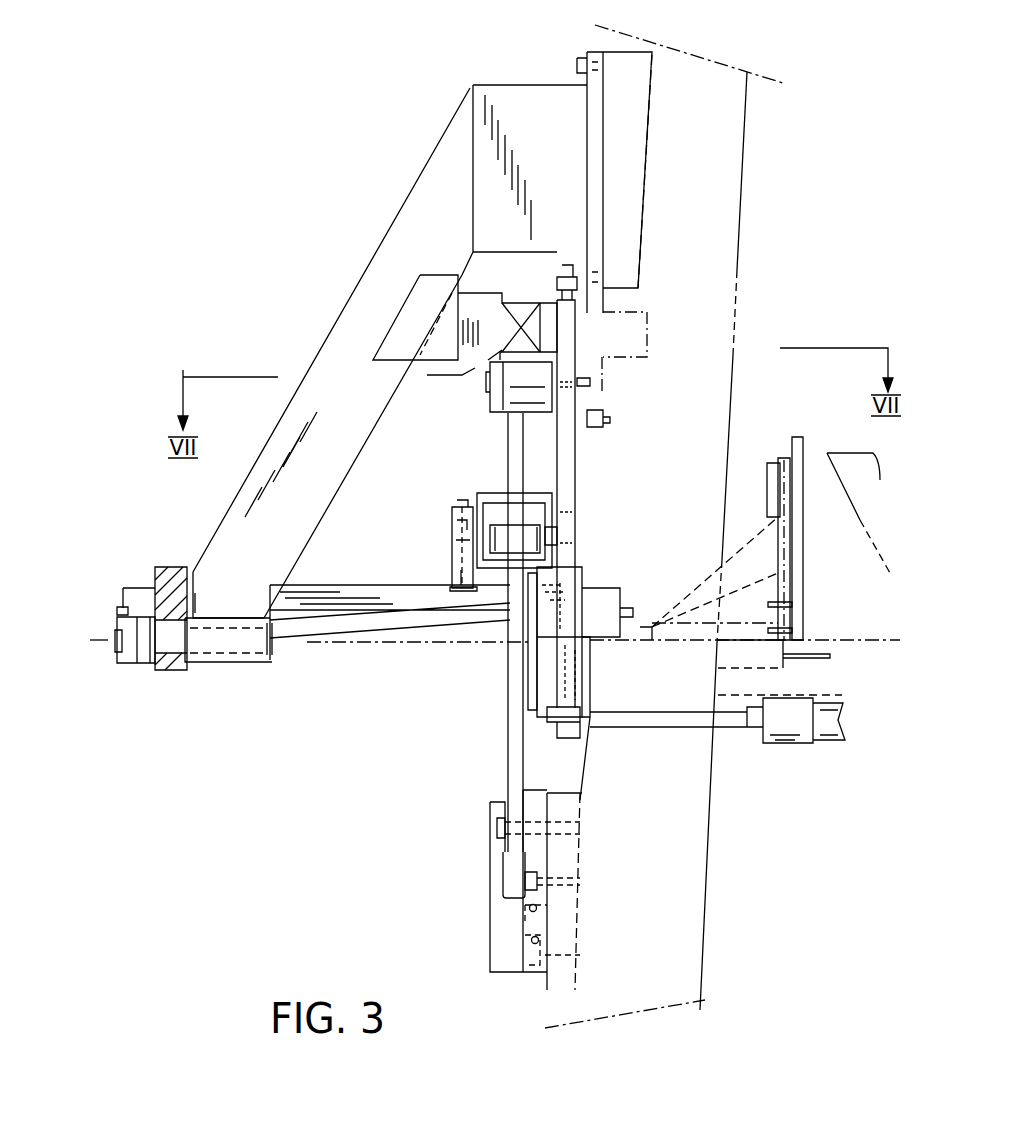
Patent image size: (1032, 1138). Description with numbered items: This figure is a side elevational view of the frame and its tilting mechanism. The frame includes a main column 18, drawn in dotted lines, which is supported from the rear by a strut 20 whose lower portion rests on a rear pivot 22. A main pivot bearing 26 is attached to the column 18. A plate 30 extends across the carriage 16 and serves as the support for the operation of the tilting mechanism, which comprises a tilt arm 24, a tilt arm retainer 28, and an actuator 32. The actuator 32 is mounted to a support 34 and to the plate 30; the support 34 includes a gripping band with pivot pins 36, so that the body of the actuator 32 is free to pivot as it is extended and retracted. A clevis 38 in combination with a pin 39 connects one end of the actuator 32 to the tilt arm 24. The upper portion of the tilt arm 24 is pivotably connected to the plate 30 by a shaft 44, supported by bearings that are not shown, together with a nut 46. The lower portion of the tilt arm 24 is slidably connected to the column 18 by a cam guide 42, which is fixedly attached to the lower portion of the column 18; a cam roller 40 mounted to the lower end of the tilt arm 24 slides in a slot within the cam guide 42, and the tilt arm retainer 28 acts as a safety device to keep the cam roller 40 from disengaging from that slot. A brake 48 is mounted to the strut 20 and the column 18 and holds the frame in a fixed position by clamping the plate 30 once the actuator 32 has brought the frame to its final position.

The carriage 16 is at (352, 650).
The main column 18 is at (686, 193).
The strut 20 is at (417, 185).
The rear pivot 22 is at (117, 655).
The tilt arm 24 is at (506, 683).
The main pivot bearing 26 is at (545, 688).
The tilt arm retainer 28 is at (497, 915).
The plate 30 is at (570, 462).
The actuator 32 is at (494, 510).
The support 34 is at (455, 570).
The pivot pins 36 is at (455, 523).
The clevis 38 is at (537, 525).
The pin 39 is at (548, 535).
The cam roller 40 is at (533, 830).
The cam guide 42 is at (538, 858).
The shaft 44 is at (487, 392).
The nut 46 is at (603, 403).
The brake 48 is at (473, 307).